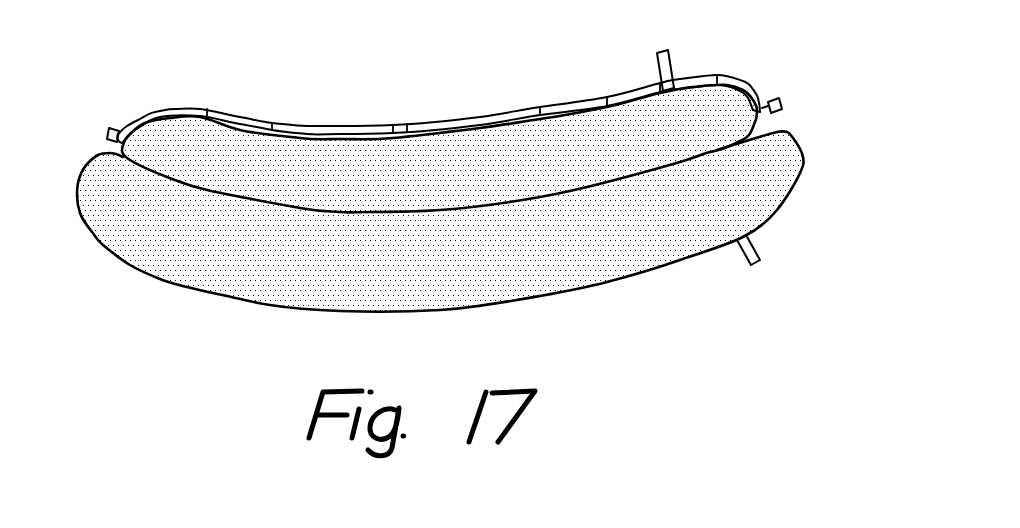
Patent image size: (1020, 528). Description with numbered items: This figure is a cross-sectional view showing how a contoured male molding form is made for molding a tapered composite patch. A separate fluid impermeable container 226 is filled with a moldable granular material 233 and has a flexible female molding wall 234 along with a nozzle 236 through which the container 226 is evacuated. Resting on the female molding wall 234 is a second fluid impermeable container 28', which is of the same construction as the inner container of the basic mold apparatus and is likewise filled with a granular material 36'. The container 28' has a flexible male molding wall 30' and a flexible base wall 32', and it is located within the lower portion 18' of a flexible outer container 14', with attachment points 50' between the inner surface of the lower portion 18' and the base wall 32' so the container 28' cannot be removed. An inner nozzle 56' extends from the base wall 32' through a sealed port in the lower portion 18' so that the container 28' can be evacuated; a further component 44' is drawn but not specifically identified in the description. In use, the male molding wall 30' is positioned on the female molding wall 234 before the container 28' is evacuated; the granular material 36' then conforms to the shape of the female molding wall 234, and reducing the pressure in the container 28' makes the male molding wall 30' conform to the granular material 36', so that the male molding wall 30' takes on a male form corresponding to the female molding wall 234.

The outer container 14' is at (438, 99).
The lower portion 18' is at (252, 93).
The male molding wall 30' is at (439, 142).
The base wall 32' is at (418, 98).
The attachment points 50' is at (541, 67).
The granular material 36' is at (637, 90).
The inner nozzle 56' is at (695, 49).
The container 28' is at (767, 73).
The end clip 44' is at (78, 125).
The container 226 is at (790, 169).
The nozzle 236 is at (758, 253).
The granular material 233 is at (574, 262).
The female molding wall 234 is at (207, 193).